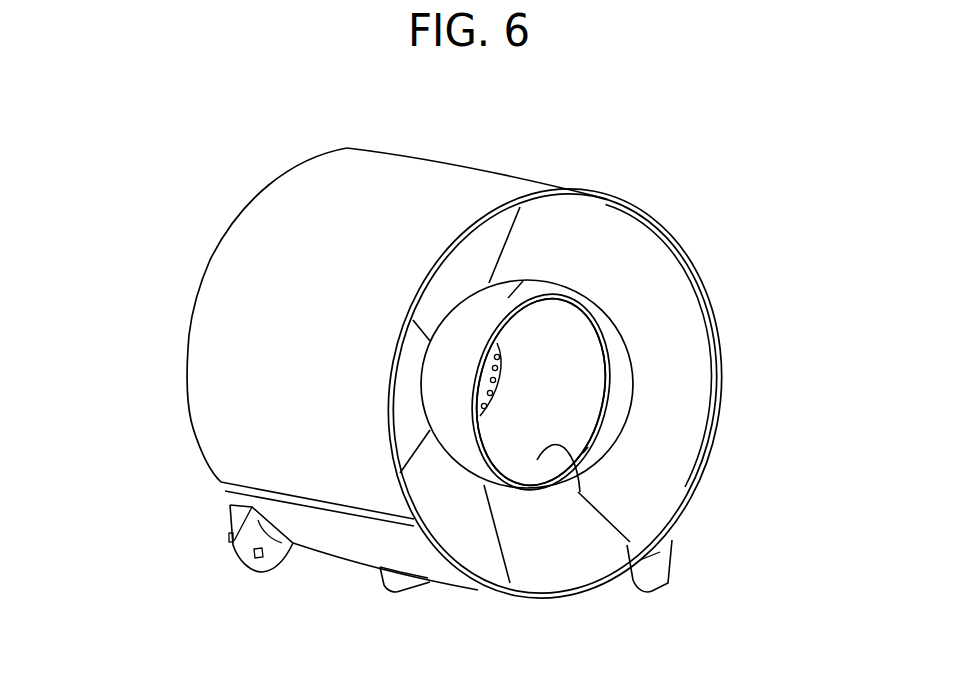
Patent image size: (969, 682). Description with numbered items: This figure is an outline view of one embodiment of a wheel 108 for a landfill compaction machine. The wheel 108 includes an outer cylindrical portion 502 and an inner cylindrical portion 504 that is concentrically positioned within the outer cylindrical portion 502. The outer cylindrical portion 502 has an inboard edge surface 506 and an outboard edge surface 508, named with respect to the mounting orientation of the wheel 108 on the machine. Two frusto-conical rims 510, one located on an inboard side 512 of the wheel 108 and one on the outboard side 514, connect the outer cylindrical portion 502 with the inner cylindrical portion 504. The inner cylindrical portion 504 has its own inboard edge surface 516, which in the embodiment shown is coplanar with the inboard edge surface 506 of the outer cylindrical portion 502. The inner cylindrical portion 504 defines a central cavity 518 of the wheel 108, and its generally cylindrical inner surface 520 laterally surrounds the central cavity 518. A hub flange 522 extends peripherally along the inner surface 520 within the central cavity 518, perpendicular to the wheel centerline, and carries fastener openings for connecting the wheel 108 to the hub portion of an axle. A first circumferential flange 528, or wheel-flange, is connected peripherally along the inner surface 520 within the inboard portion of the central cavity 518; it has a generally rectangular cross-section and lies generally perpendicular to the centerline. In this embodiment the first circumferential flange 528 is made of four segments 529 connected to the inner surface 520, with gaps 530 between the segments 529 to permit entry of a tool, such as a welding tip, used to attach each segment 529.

The wheel 108 is at (683, 194).
The outer cylindrical portion 502 is at (413, 178).
The inner cylindrical portion 504 is at (523, 281).
The inboard edge surface 506 is at (714, 487).
The outboard edge surface 508 is at (203, 278).
The frusto-conical rim 510 is at (560, 243).
The inboard side 512 is at (766, 380).
The outboard side 514 is at (165, 416).
The inboard edge surface 516 is at (655, 405).
The central cavity 518 is at (592, 357).
The inner surface 520 is at (578, 492).
The hub flange 522 is at (497, 343).
The first circumferential flange 528 is at (604, 323).
The segment 529 is at (603, 428).
The gap 530 is at (588, 456).